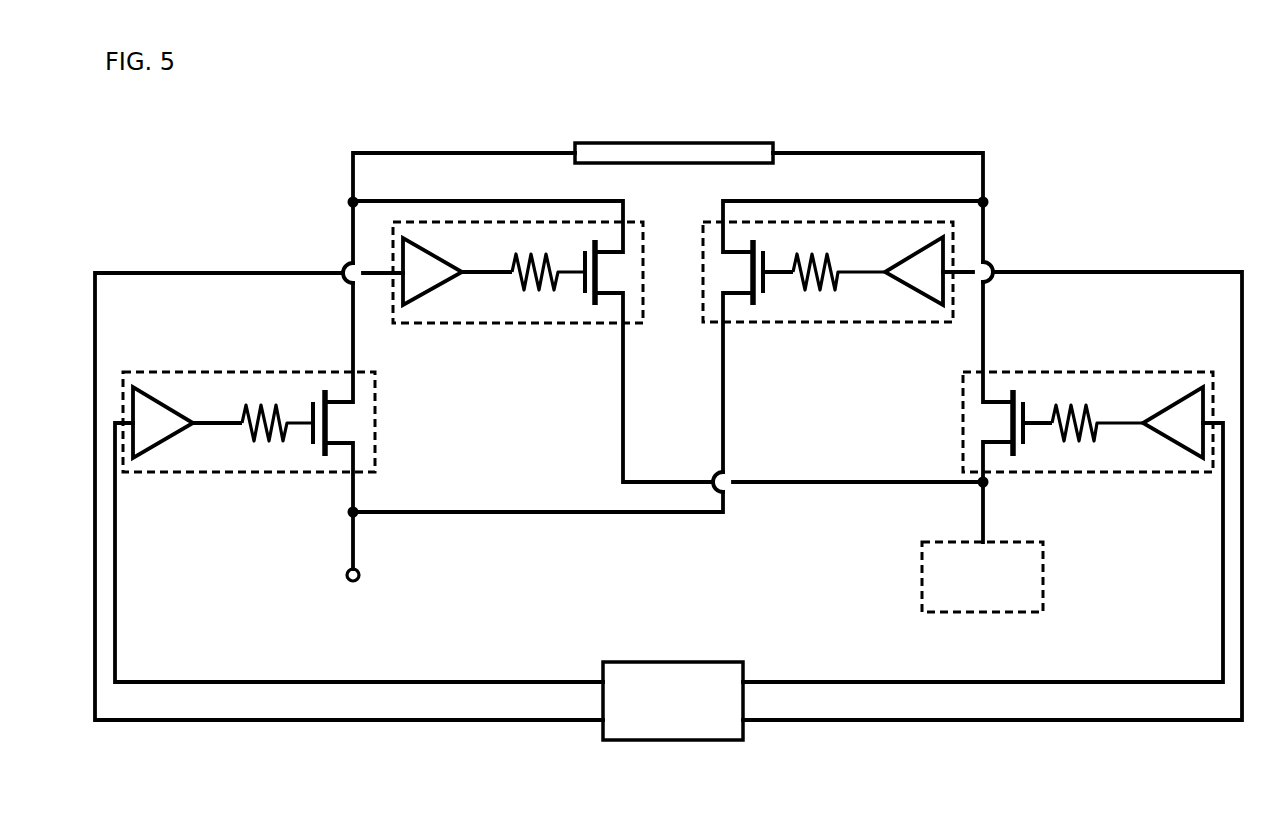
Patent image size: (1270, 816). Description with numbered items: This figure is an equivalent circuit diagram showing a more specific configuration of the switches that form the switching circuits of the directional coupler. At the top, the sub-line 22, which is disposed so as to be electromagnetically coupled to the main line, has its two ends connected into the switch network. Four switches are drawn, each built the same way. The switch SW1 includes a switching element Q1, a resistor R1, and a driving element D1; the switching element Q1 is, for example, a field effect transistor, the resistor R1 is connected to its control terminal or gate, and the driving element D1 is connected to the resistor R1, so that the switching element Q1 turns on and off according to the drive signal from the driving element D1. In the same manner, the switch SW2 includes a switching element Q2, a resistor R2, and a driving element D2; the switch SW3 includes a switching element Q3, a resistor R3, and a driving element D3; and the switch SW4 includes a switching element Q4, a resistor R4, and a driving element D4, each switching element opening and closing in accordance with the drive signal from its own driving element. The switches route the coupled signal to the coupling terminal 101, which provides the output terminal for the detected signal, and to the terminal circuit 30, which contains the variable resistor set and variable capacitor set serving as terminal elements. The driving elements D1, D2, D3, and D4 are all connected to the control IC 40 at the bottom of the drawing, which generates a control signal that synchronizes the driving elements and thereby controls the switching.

The sub-line 22 is at (574, 163).
The switch SW1 is at (637, 220).
The switch SW2 is at (365, 371).
The switch SW3 is at (715, 324).
The switch SW4 is at (962, 377).
The driving element D1 is at (436, 306).
The driving element D2 is at (164, 460).
The driving element D3 is at (910, 306).
The driving element D4 is at (1177, 458).
The resistor R1 is at (527, 306).
The resistor R2 is at (256, 460).
The resistor R3 is at (818, 306).
The resistor R4 is at (1082, 458).
The switching element Q1 is at (585, 306).
The switching element Q2 is at (313, 460).
The switching element Q3 is at (763, 306).
The switching element Q4 is at (1027, 458).
The terminal circuit 30 is at (922, 570).
The control integrated circuit 40 is at (724, 662).
The coupling terminal 101 is at (353, 582).